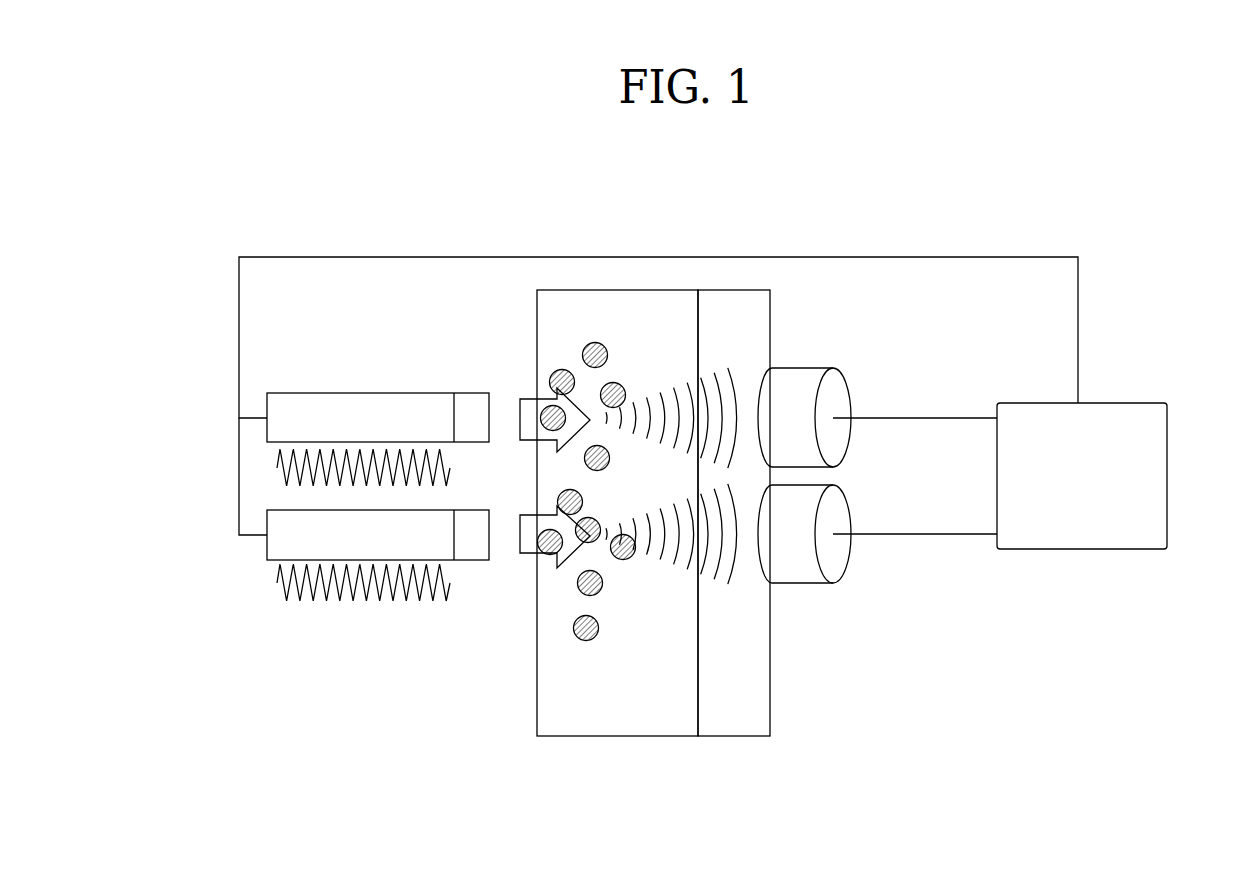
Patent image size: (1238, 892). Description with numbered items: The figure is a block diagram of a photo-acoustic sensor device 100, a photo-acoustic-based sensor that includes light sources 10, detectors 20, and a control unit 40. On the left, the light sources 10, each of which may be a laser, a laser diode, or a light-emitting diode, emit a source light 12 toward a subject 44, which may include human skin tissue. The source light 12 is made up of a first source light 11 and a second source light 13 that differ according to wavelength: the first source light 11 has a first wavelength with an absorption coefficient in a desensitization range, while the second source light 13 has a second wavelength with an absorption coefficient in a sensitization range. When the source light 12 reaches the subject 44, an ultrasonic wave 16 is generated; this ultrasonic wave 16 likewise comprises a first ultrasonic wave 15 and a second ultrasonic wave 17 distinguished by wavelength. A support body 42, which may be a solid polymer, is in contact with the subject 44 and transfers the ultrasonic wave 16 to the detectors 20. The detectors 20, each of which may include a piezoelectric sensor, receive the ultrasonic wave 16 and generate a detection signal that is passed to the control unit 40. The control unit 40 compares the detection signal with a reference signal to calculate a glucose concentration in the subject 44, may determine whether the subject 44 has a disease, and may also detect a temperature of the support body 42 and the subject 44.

The photo-acoustic sensor device 100 is at (998, 211).
The light sources 10 is at (285, 510).
The first source light 11 is at (327, 487).
The source light 12 is at (312, 529).
The second source light 13 is at (285, 590).
The first ultrasonic wave 15 is at (737, 460).
The ultrasonic wave 16 is at (761, 520).
The second ultrasonic wave 17 is at (737, 577).
The detectors 20 is at (837, 567).
The control unit 40 is at (1112, 403).
The support body 42 is at (735, 727).
The subject 44 is at (613, 727).